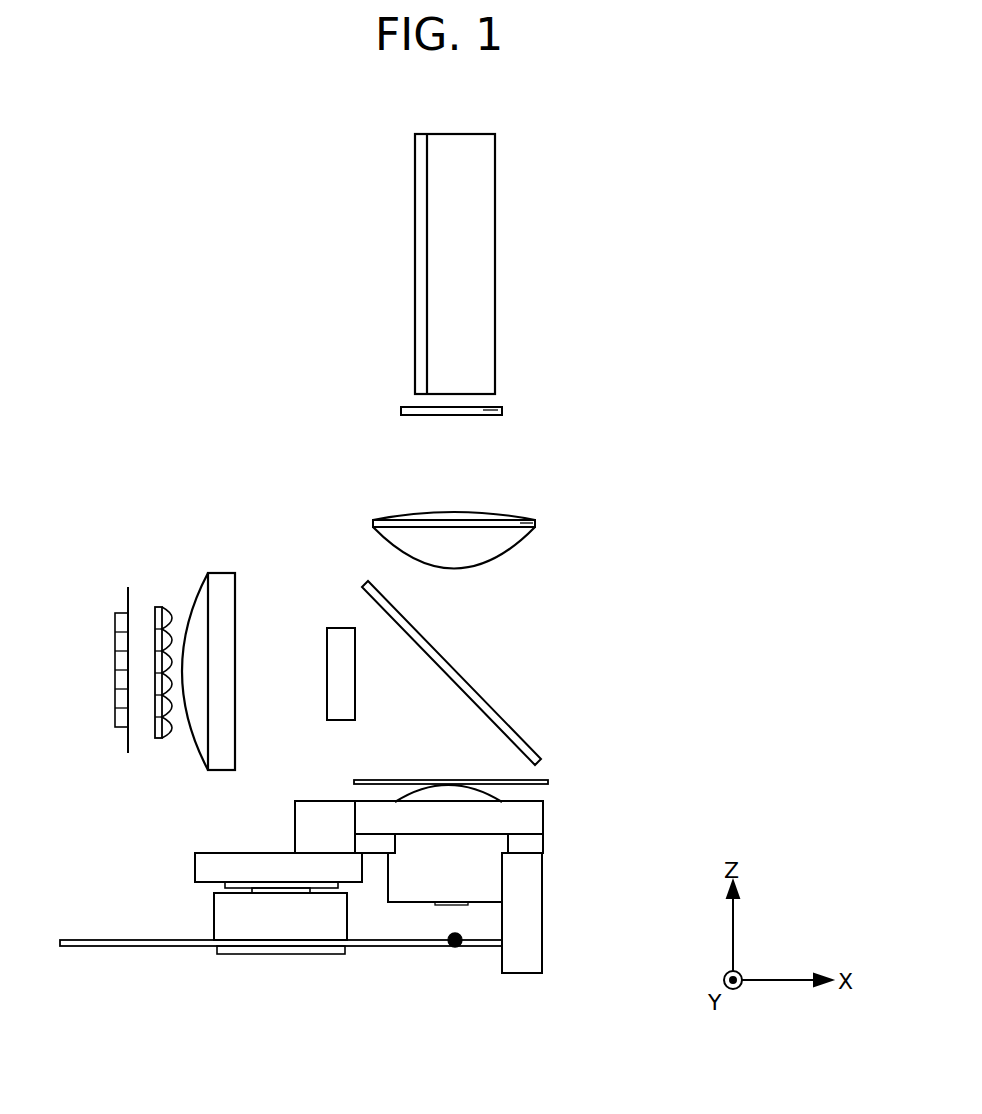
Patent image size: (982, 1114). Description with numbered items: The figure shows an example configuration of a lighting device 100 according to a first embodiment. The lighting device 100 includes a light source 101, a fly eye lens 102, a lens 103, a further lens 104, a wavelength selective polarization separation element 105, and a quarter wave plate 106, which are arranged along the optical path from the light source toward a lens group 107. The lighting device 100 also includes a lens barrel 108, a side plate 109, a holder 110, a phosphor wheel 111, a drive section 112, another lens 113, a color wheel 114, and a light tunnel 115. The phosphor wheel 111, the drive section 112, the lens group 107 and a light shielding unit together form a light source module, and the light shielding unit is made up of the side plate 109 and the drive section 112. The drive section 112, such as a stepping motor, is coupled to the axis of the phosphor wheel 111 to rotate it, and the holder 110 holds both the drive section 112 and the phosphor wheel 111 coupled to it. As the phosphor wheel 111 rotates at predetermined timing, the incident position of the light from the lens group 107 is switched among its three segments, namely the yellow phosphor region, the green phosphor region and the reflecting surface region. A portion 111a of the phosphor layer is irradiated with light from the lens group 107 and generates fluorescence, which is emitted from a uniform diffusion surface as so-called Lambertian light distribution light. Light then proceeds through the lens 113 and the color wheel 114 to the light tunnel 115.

The lighting device 100 is at (72, 250).
The light source 101 is at (113, 698).
The fly eye lens 102 is at (162, 734).
The lens 103 is at (220, 762).
The lens 104 is at (343, 706).
The wavelength selective polarization separation element 105 is at (503, 719).
The quarter wave plate 106 is at (543, 782).
The lens group 107 is at (498, 796).
The lens barrel 108 is at (402, 888).
The side plate 109 is at (534, 900).
The holder 110 is at (205, 864).
The phosphor wheel 111 is at (95, 948).
The portion of the phosphor layer 111a is at (455, 948).
The drive section 112 is at (230, 915).
The lens 113 is at (526, 522).
The color wheel 114 is at (485, 410).
The light tunnel 115 is at (481, 213).